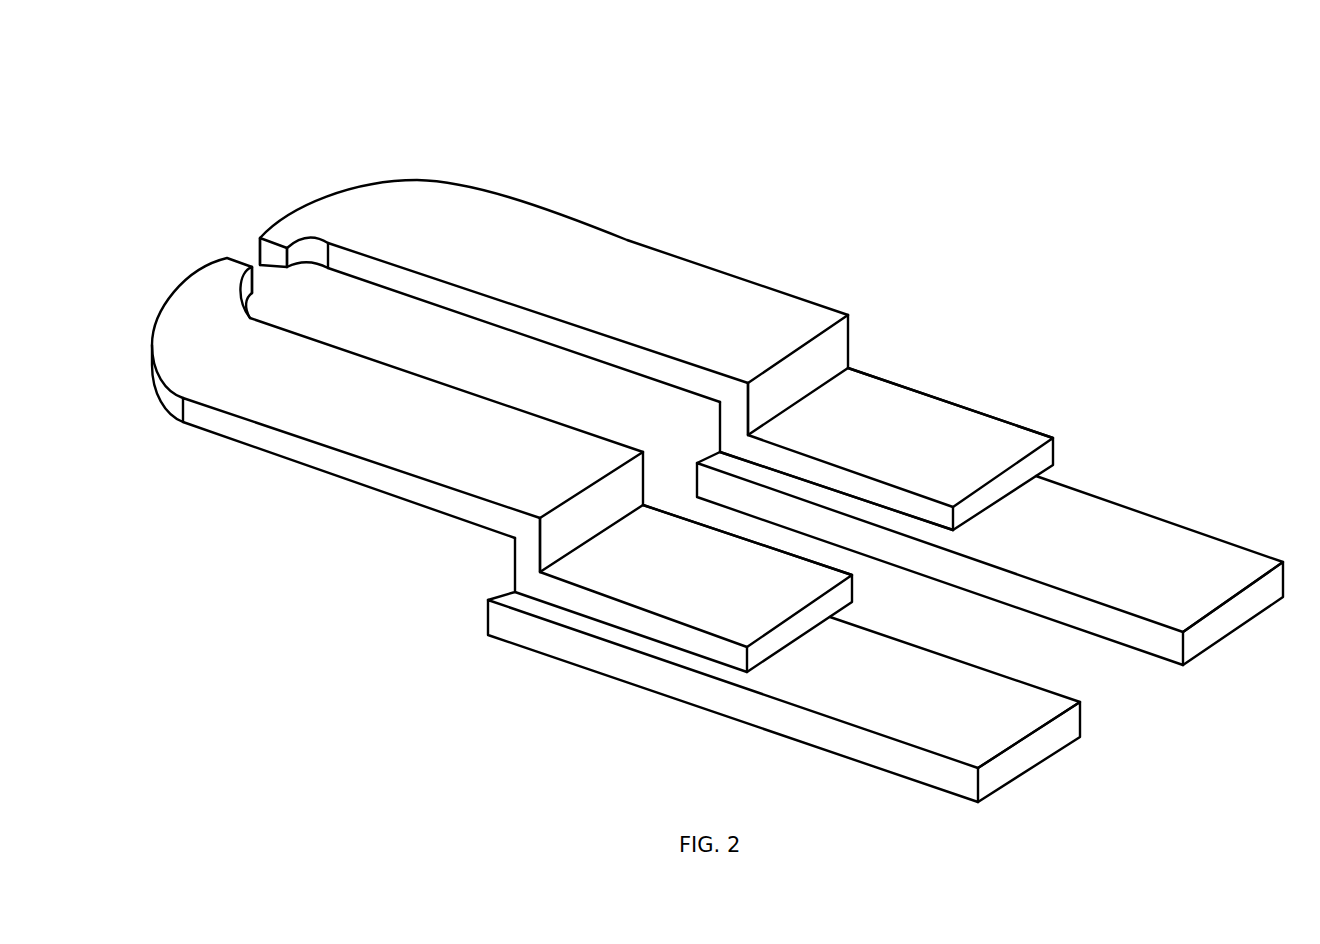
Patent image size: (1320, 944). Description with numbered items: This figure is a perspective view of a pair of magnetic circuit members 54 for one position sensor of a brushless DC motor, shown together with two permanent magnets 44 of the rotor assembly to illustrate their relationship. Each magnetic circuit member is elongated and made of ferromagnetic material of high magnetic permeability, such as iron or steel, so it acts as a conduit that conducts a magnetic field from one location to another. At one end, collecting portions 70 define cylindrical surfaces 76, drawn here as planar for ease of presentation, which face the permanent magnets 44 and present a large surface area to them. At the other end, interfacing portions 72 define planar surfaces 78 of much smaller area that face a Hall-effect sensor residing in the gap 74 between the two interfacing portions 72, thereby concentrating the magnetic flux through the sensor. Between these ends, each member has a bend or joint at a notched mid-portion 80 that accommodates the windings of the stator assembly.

The magnetic circuit members 54 is at (1212, 96).
The interfacing portions 72 is at (430, 152).
The gap 74 is at (238, 235).
The planar surface 78 is at (275, 274).
The collecting portions 70 is at (955, 360).
The cylindrical surface 76 is at (868, 520).
The mid-portion 80 is at (483, 566).
The permanent magnets 44 is at (1220, 776).